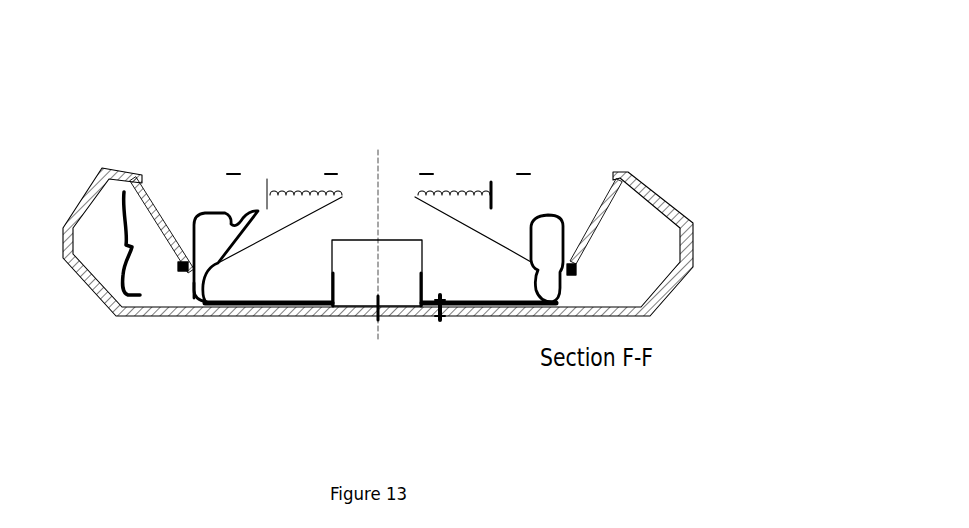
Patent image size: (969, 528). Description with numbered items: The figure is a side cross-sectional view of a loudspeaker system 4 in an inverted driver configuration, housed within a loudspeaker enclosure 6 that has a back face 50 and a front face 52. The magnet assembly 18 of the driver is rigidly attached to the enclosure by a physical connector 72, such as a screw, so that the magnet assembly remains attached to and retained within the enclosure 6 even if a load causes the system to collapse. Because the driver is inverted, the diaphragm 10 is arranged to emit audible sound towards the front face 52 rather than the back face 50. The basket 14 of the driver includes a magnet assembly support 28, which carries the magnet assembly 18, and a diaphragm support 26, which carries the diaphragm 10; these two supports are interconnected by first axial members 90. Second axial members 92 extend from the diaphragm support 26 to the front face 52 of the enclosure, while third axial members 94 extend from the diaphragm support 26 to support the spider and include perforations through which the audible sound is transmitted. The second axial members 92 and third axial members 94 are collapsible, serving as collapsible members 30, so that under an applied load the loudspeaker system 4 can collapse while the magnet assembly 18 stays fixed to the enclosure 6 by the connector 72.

The loudspeaker system 4 is at (615, 83).
The loudspeaker enclosure 6 is at (678, 267).
The diaphragm 10 is at (294, 228).
The basket 14 is at (106, 248).
The magnet assembly 18 is at (403, 290).
The diaphragm support 26 is at (183, 267).
The magnet assembly support 28 is at (327, 290).
The collapsible members 30 is at (421, 163).
The back face 50 is at (270, 307).
The front face 52 is at (116, 166).
The physical connector 72 is at (380, 310).
The first axial members 90 is at (195, 277).
The second axial members 92 is at (150, 213).
The third axial members 94 is at (314, 118).